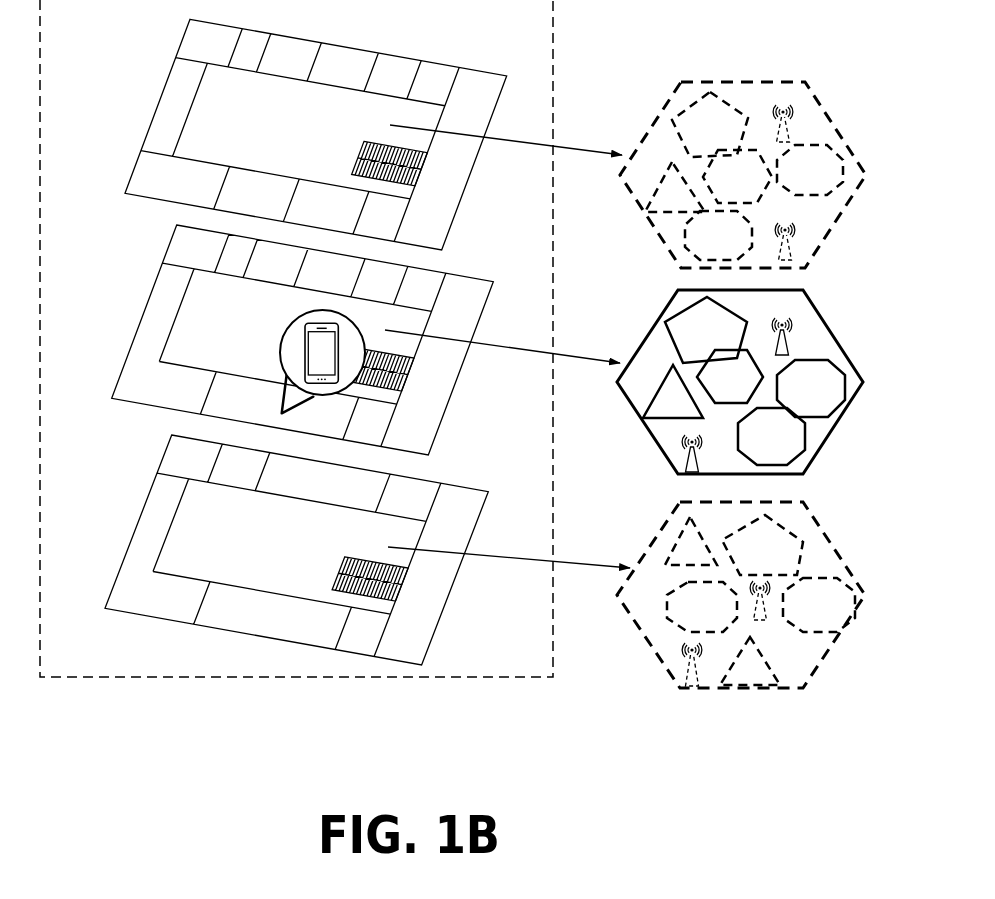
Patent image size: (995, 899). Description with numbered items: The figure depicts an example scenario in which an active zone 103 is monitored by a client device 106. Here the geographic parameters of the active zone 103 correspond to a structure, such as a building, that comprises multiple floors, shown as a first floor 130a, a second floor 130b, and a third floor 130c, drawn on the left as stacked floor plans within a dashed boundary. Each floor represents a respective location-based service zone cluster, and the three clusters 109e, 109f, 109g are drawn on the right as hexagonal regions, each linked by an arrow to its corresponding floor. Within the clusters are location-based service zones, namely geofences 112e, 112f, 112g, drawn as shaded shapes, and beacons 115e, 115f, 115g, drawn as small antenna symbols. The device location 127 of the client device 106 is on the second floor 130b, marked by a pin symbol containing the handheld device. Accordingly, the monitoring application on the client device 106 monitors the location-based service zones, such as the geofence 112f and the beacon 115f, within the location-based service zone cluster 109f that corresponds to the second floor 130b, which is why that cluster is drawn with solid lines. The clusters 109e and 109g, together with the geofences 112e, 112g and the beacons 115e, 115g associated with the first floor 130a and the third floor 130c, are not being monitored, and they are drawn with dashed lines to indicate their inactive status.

The active zone 103 is at (296, 678).
The first floor 130a is at (316, 134).
The second floor 130b is at (303, 340).
The third floor 130c is at (296, 550).
The device location 127 is at (281, 413).
The client device 106 is at (328, 358).
The location-based service zone cluster 109e is at (651, 127).
The location-based service zone cluster 109f is at (651, 328).
The location-based service zone cluster 109g is at (652, 657).
The geofence 112e is at (710, 124).
The geofence 112f is at (771, 436).
The geofence 112g is at (762, 545).
The beacon 115e is at (781, 110).
The beacon 115f is at (678, 437).
The beacon 115g is at (698, 660).